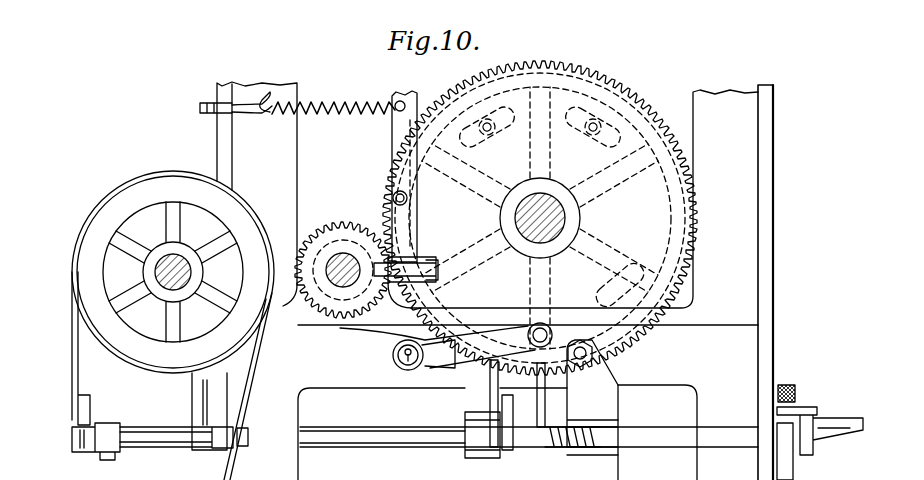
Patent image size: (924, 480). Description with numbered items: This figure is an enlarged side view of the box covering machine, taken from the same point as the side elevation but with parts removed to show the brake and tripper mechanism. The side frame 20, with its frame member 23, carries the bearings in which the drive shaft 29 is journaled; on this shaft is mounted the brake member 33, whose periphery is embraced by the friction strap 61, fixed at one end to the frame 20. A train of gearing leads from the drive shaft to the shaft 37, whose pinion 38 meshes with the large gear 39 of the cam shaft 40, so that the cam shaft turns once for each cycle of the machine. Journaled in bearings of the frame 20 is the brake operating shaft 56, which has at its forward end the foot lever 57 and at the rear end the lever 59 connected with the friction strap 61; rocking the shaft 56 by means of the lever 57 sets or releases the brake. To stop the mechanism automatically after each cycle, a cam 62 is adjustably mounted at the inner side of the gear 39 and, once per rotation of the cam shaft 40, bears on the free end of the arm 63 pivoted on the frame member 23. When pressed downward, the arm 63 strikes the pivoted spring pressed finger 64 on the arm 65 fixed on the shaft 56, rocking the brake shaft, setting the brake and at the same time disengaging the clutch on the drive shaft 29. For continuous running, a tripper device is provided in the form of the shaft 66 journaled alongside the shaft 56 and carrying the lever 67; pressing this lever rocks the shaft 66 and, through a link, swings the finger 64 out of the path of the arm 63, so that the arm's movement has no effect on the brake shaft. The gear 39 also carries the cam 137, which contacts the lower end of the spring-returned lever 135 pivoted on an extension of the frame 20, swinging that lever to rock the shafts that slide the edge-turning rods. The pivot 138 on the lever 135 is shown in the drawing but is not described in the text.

The side frame 20 is at (768, 168).
The frame member 23 is at (670, 380).
The drive shaft 29 is at (160, 278).
The brake member 33 is at (138, 357).
The shaft 37 is at (330, 282).
The pinion 38 is at (326, 224).
The gear 39 is at (639, 96).
The cam shaft 40 is at (560, 218).
The brake operating shaft 56 is at (352, 438).
The foot lever 57 is at (822, 420).
The lever 59 is at (90, 411).
The friction strap 61 is at (78, 375).
The cam 62 is at (574, 306).
The arm 63 is at (430, 364).
The spring pressed finger 64 is at (490, 390).
The arm 65 is at (474, 448).
The tripper shaft 66 is at (506, 410).
The lever 67 is at (795, 390).
The lever 135 is at (391, 122).
The cam 137 is at (521, 75).
The pivot pin 138 is at (408, 198).